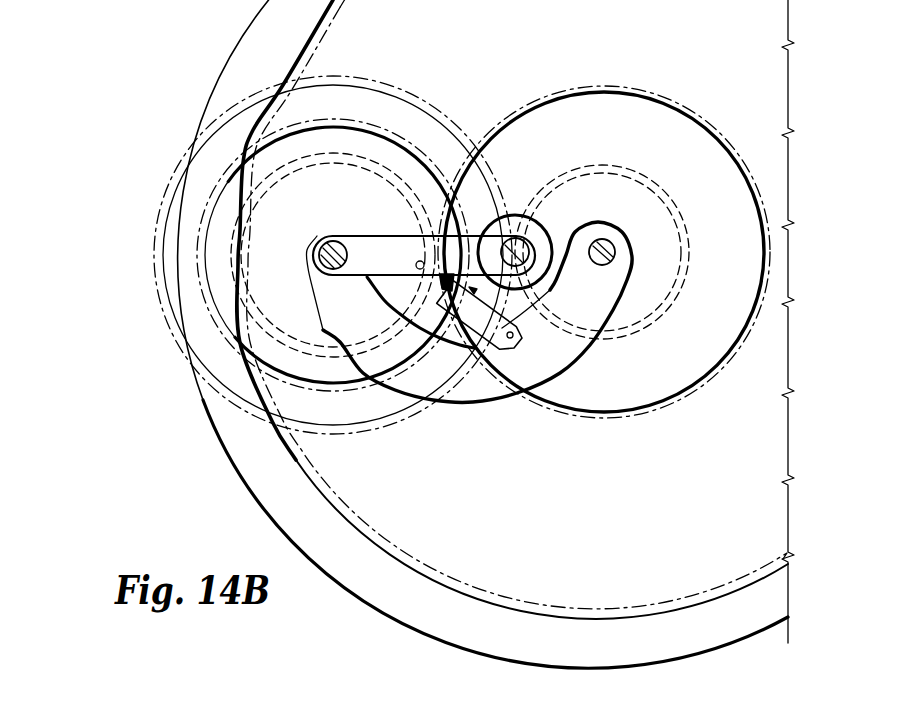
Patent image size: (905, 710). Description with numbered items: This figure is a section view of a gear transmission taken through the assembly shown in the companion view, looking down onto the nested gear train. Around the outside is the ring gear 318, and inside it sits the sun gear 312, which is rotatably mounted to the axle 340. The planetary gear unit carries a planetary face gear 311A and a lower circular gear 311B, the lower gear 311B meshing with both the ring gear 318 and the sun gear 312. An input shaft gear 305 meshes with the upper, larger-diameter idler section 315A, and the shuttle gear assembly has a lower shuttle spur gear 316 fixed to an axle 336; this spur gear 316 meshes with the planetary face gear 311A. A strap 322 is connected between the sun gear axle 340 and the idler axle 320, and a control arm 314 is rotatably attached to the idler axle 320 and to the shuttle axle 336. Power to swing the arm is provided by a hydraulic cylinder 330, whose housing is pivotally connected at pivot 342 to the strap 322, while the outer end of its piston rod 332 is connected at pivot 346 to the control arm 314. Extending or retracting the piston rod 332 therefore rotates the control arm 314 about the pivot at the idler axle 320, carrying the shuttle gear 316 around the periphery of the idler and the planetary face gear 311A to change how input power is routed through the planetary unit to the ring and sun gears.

The input shaft gear 305 is at (683, 283).
The planetary face gear 311A is at (213, 310).
The lower circular gear 311B is at (287, 343).
The sun gear 312 is at (643, 93).
The control arm 314 is at (392, 240).
The upper larger diameter gear 315A is at (180, 163).
The lower shuttle spur gear 316 is at (540, 217).
The ring gear 318 is at (272, 32).
The idler axle 320 is at (333, 240).
The strap 322 is at (523, 374).
The hydraulic cylinder 330 is at (478, 312).
The piston rod 332 is at (400, 313).
The axle 336 is at (512, 232).
The axle 340 is at (600, 258).
The pivot 342 is at (520, 330).
The pivot 346 is at (410, 236).